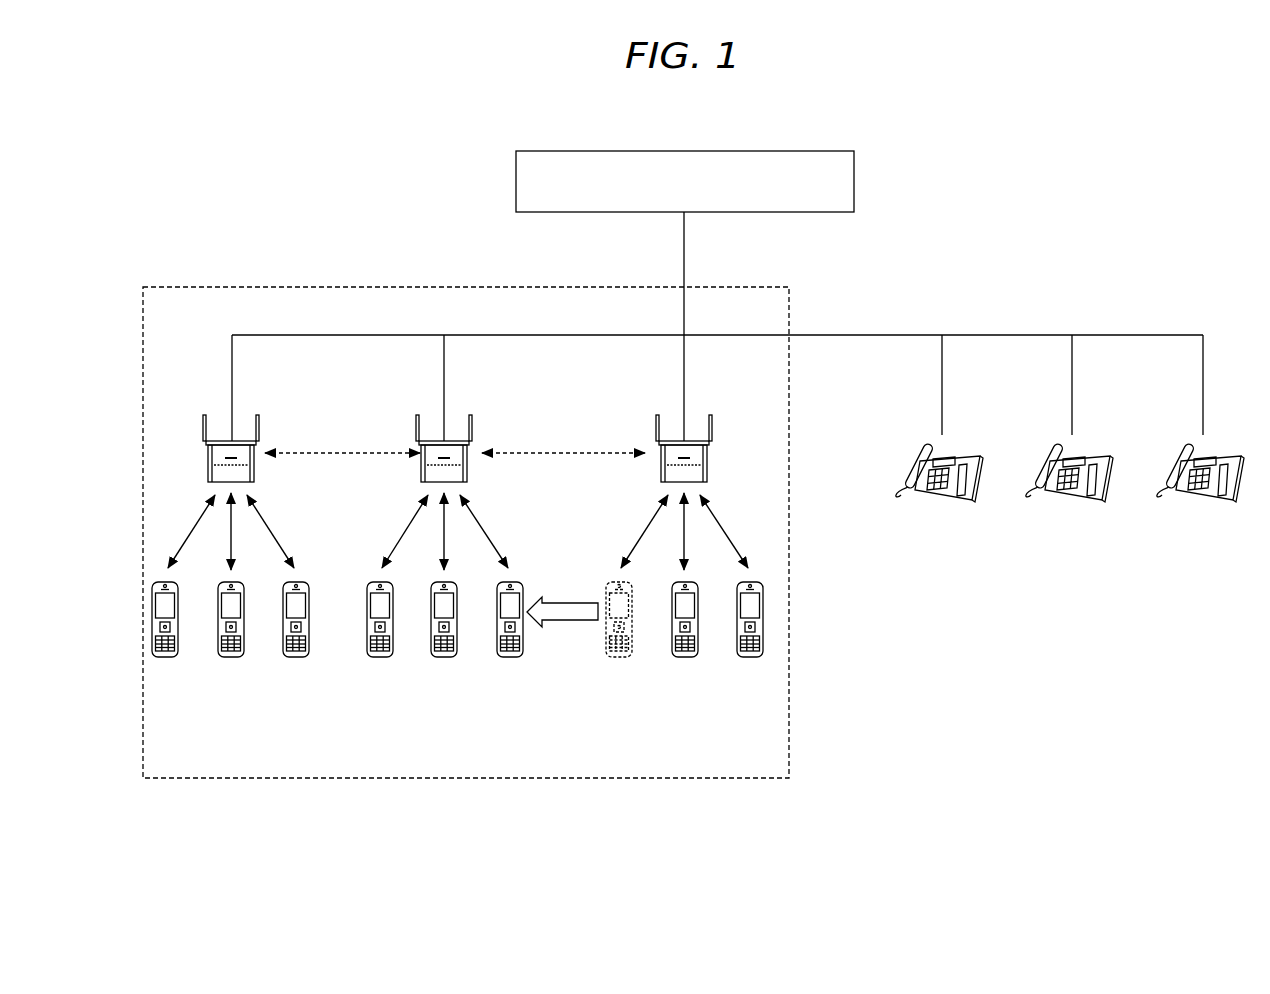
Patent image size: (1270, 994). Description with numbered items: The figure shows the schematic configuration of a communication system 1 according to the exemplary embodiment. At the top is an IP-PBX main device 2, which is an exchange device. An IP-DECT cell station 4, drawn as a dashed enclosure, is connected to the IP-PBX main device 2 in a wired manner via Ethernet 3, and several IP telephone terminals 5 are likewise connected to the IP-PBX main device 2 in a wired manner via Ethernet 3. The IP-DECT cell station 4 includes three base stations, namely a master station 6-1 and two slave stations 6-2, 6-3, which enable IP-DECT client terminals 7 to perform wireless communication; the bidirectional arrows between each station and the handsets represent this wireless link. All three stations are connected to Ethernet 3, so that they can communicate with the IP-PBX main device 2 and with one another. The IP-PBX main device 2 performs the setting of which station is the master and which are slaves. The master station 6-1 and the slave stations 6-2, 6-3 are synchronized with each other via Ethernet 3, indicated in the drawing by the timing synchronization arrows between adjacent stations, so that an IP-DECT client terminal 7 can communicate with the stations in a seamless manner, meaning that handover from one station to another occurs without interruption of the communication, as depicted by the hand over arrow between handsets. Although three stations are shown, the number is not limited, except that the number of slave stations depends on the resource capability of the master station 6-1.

The communication system 1 is at (980, 128).
The IP-PBX main device 2 is at (854, 197).
The Ethernet 3 is at (684, 248).
The IP-DECT cell station 4 is at (789, 723).
The IP telephone terminal 5 is at (935, 500).
The master station 6-1 is at (240, 440).
The slave station 6-2 is at (452, 440).
The slave station 6-3 is at (691, 440).
The IP-DECT client terminal 7 is at (231, 657).